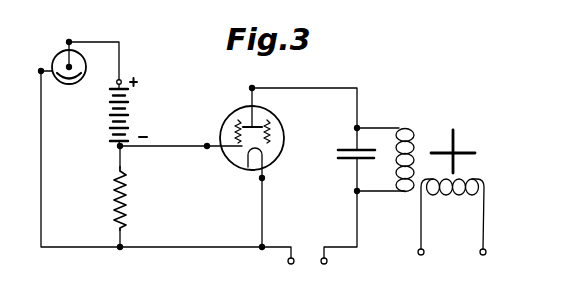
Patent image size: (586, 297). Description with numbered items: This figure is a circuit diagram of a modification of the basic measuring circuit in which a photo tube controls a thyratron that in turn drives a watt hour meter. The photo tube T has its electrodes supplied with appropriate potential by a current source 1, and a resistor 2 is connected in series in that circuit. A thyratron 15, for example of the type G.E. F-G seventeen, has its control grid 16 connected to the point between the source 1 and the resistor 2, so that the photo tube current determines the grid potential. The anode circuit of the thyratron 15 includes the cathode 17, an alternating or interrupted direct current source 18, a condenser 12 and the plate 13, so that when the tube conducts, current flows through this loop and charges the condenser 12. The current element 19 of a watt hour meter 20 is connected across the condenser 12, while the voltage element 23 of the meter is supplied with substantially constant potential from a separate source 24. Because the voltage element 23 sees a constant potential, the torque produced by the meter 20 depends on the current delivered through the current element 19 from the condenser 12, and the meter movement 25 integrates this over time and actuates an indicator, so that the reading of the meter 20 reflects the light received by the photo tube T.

The photo tube T is at (54, 58).
The current source 1 is at (107, 111).
The resistor 2 is at (128, 208).
The condenser 12 is at (353, 160).
The plate 13 is at (258, 91).
The thyratron 15 is at (234, 112).
The control grid 16 is at (233, 135).
The cathode 17 is at (240, 161).
The alternating or interrupted direct current source 18 is at (307, 260).
The current element 19 is at (399, 126).
The watt hour meter 20 is at (461, 158).
The voltage element 23 is at (452, 195).
The source 24 is at (452, 250).
The meter movement 25 is at (456, 146).